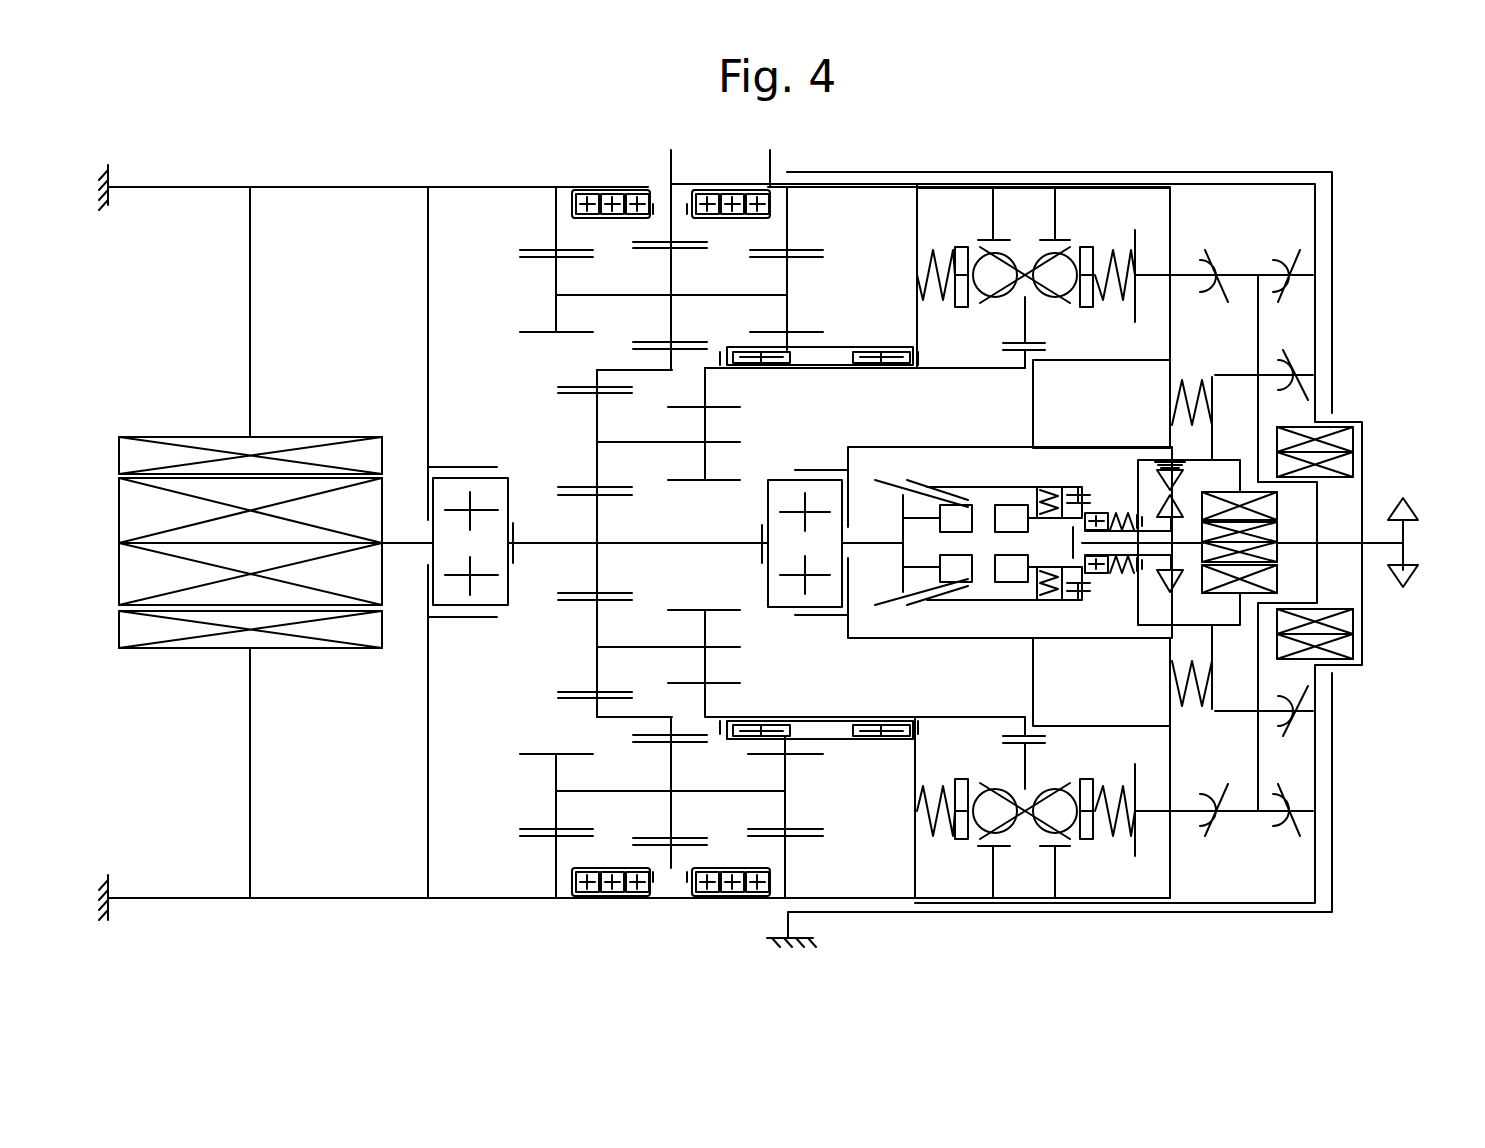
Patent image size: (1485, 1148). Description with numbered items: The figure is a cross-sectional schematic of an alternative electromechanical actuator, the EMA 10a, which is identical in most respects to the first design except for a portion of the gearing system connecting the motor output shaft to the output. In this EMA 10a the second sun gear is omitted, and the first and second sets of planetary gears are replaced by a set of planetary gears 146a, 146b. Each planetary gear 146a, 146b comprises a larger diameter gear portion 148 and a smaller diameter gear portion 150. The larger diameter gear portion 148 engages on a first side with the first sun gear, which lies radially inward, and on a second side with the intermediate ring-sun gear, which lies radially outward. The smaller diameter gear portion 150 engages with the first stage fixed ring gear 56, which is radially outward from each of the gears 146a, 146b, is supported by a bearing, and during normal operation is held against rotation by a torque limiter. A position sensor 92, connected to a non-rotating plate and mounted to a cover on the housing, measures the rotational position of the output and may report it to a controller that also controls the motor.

The alternative EMA 10a is at (1379, 171).
The larger diameter gear portion 148 is at (572, 384).
The planetary gear 146a is at (590, 408).
The planetary gear 146b is at (592, 658).
The smaller diameter gear portion 150 is at (720, 412).
The first stage fixed ring gear 56 is at (833, 372).
The position sensor 92 is at (1343, 440).